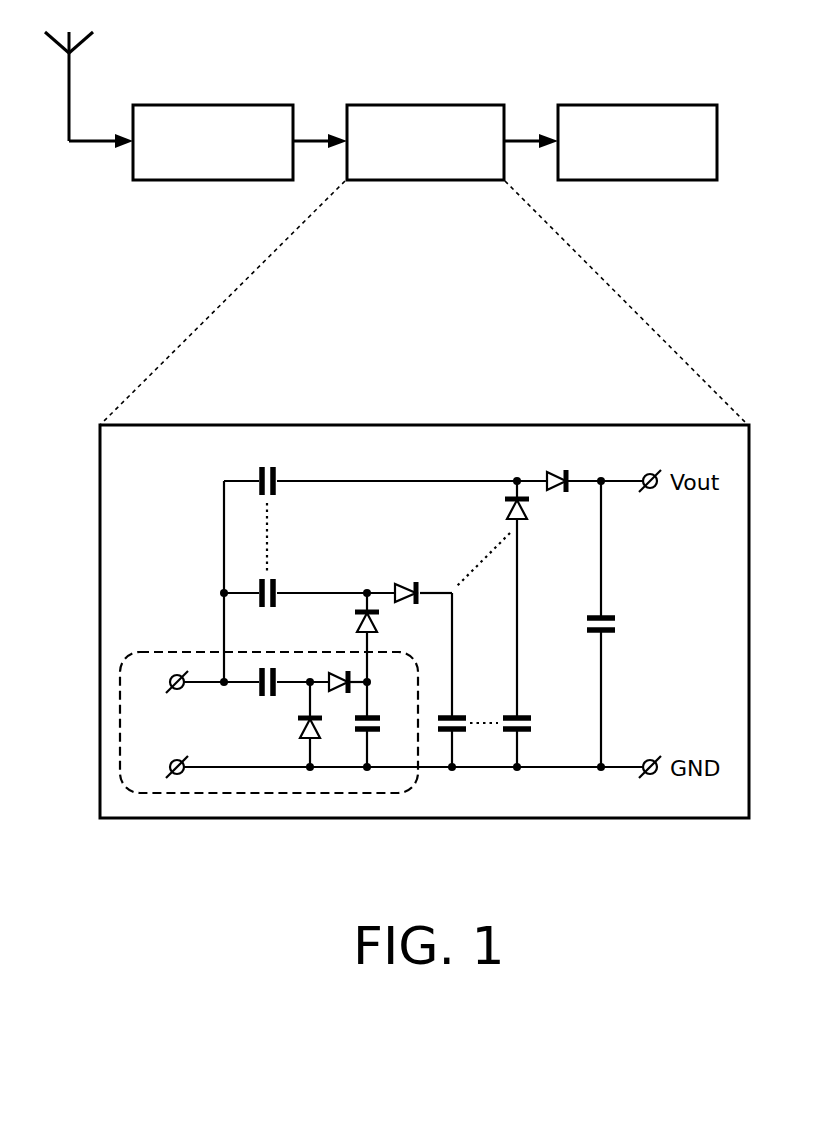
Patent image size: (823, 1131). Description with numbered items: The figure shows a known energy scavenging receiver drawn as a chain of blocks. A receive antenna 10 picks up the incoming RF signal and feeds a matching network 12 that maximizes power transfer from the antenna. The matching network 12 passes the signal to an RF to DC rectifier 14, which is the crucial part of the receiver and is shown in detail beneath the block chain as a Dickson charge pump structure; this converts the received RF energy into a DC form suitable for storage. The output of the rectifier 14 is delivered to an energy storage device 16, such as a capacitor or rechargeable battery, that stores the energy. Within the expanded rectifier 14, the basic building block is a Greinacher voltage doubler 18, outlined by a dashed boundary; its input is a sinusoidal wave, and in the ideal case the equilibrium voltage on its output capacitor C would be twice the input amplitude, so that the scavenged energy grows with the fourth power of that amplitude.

The receive antenna 10 is at (69, 77).
The matching network 12 is at (212, 105).
The RF to DC rectifier 14 is at (424, 105).
The energy storage device 16 is at (638, 105).
The Greinacher voltage doubler 18 is at (260, 794).